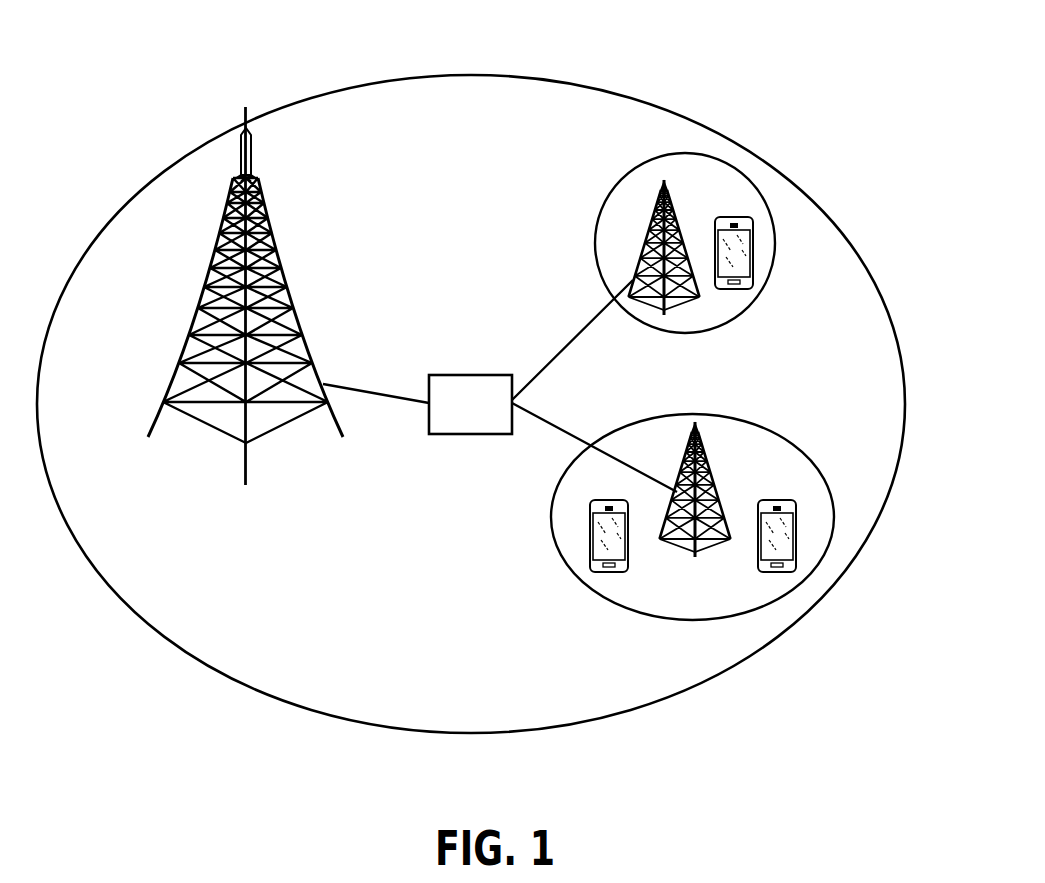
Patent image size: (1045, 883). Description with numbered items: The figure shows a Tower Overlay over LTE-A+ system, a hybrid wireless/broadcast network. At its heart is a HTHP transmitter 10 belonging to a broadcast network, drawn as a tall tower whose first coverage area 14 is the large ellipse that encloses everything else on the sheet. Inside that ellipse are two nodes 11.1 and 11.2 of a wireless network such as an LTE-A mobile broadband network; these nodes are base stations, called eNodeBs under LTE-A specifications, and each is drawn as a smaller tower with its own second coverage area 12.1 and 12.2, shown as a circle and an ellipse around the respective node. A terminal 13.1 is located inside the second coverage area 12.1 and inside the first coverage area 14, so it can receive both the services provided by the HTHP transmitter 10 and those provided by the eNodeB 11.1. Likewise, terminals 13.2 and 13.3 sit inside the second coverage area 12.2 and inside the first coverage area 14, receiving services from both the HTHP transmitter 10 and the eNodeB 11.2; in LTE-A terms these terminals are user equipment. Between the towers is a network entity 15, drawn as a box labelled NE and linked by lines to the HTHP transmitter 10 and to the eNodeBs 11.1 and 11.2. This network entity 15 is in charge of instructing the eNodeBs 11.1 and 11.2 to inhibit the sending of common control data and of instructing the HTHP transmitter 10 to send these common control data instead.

The HTHP transmitter 10 is at (305, 347).
The node 11.1 is at (674, 207).
The node 11.2 is at (683, 535).
The second coverage area 12.1 is at (772, 215).
The second coverage area 12.2 is at (777, 600).
The terminal 13.1 is at (737, 217).
The terminal 13.2 is at (607, 572).
The terminal 13.3 is at (796, 547).
The first coverage area 14 is at (302, 102).
The network entity 15 is at (458, 375).